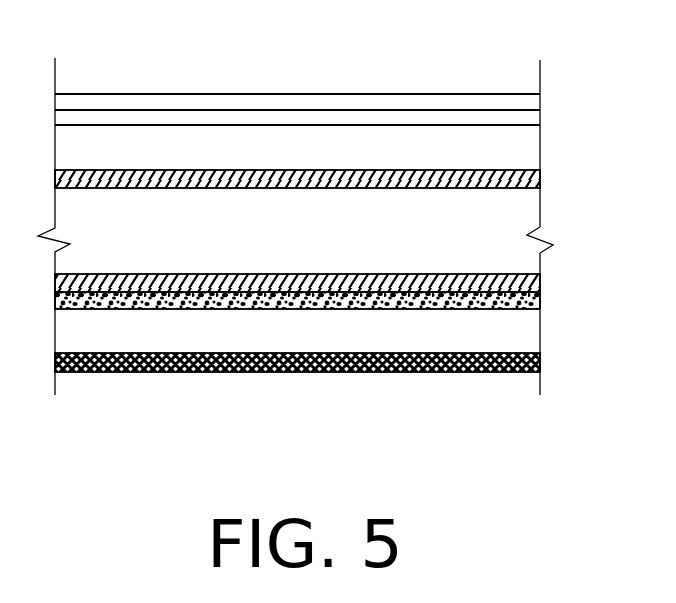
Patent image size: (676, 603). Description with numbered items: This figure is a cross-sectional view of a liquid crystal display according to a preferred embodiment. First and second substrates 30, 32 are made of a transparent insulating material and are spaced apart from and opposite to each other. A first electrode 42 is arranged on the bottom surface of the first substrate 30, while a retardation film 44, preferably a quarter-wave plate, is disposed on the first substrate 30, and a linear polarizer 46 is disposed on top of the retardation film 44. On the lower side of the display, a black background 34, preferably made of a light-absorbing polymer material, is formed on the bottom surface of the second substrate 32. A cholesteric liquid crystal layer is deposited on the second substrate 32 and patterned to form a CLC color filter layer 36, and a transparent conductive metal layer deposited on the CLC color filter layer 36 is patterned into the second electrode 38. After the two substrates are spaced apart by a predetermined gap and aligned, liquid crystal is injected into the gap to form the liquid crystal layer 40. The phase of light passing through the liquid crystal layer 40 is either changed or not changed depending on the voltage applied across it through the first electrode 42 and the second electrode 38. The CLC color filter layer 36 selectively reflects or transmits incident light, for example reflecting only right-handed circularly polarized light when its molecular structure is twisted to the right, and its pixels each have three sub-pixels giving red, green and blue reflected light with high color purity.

The first substrate 30 is at (540, 148).
The second substrate 32 is at (540, 336).
The black background 34 is at (540, 363).
The CLC color filter layer 36 is at (540, 303).
The second electrode 38 is at (540, 285).
The liquid crystal layer 40 is at (540, 208).
The first electrode 42 is at (540, 178).
The retardation film 44 is at (540, 120).
The linear polarizer 46 is at (540, 100).